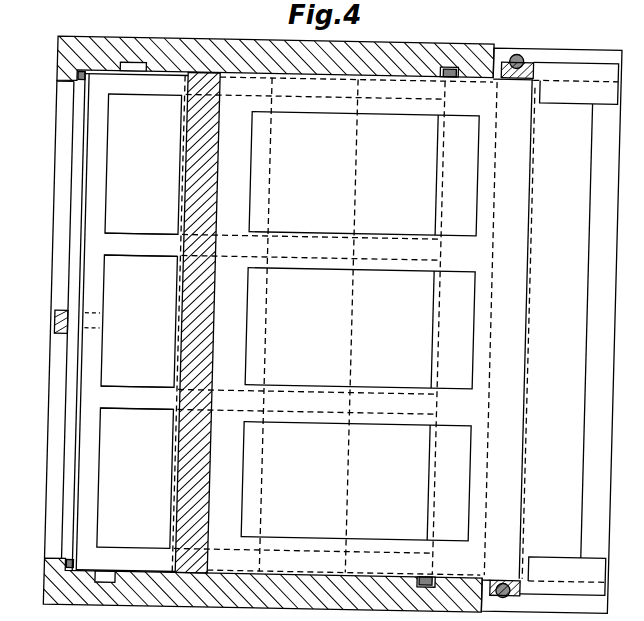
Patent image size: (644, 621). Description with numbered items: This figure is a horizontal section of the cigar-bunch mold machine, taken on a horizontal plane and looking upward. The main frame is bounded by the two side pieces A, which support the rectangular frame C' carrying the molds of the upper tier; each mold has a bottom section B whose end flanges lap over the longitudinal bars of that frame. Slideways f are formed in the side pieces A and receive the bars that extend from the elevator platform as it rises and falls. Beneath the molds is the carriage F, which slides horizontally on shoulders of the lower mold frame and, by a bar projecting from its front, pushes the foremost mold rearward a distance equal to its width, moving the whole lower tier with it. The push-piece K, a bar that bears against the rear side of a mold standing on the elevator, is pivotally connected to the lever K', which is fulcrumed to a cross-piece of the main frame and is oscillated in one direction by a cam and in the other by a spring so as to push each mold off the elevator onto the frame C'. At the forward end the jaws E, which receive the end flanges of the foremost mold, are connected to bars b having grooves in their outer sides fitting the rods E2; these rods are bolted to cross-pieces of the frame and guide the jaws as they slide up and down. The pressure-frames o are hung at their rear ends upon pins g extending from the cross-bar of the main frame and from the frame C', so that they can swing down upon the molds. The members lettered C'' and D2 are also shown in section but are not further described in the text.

The side pieces A is at (269, 315).
The slideways f is at (135, 61).
The carriage F is at (437, 332).
The push-piece K is at (60, 319).
The lever K' is at (39, 321).
The pins g is at (111, 317).
The pressure-frame o is at (139, 322).
The dividing bar C'' is at (197, 321).
The bottom section of mold B is at (274, 166).
The frame C' is at (354, 327).
The housing wall D2 is at (561, 334).
The jaws E is at (569, 328).
The bars b is at (513, 332).
The rods E2 is at (515, 612).